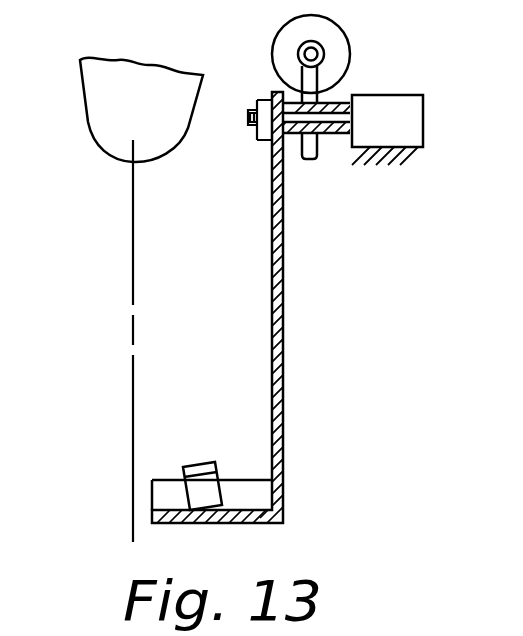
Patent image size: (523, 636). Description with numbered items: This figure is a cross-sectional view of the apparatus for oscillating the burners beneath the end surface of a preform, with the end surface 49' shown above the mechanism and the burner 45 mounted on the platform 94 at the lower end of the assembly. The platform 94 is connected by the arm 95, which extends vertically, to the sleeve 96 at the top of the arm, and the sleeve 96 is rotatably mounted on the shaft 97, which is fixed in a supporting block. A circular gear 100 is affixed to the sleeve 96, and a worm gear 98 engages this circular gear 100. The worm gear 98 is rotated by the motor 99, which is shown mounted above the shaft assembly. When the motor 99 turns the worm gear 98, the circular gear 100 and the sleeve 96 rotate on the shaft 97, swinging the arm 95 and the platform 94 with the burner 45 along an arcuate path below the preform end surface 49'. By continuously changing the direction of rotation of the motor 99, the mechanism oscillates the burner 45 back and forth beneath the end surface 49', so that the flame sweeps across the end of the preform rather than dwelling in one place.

The cup-shaped member 49' is at (110, 110).
The arm 95 is at (284, 278).
The platform 94 is at (253, 523).
The burner 45 is at (198, 462).
The motor 99 is at (288, 32).
The worm gear 98 is at (318, 44).
The sleeve 96 is at (335, 102).
The shaft 97 is at (337, 134).
The circular gear 100 is at (310, 160).